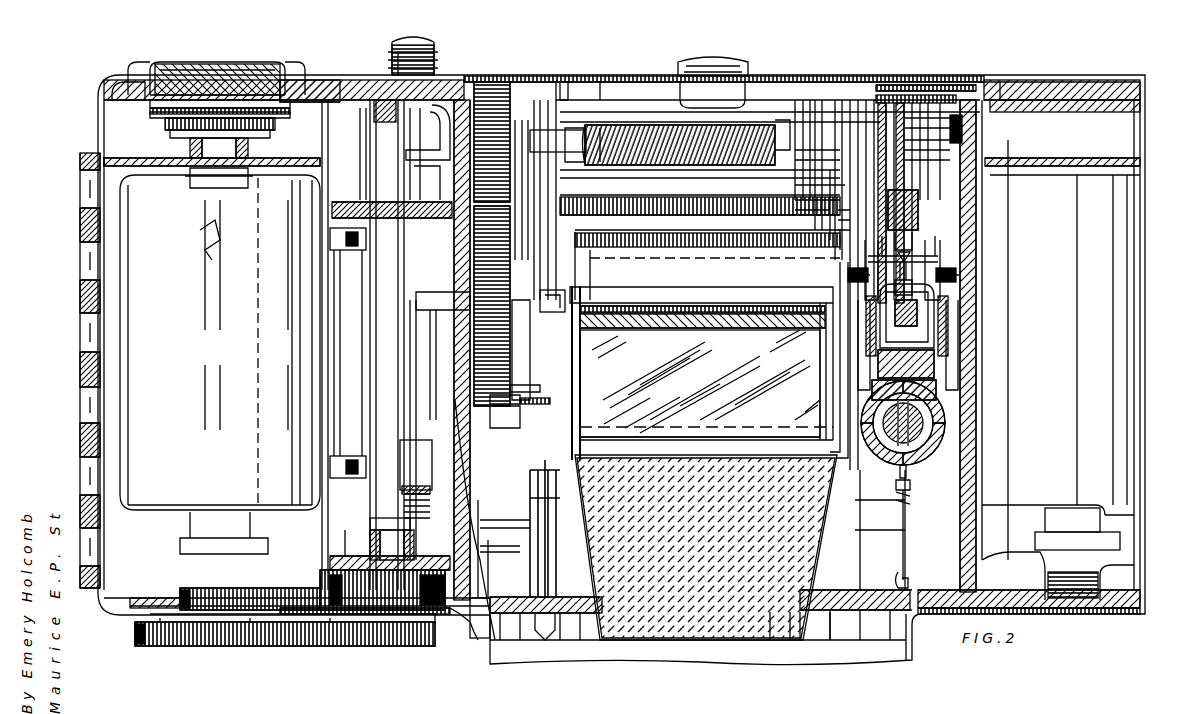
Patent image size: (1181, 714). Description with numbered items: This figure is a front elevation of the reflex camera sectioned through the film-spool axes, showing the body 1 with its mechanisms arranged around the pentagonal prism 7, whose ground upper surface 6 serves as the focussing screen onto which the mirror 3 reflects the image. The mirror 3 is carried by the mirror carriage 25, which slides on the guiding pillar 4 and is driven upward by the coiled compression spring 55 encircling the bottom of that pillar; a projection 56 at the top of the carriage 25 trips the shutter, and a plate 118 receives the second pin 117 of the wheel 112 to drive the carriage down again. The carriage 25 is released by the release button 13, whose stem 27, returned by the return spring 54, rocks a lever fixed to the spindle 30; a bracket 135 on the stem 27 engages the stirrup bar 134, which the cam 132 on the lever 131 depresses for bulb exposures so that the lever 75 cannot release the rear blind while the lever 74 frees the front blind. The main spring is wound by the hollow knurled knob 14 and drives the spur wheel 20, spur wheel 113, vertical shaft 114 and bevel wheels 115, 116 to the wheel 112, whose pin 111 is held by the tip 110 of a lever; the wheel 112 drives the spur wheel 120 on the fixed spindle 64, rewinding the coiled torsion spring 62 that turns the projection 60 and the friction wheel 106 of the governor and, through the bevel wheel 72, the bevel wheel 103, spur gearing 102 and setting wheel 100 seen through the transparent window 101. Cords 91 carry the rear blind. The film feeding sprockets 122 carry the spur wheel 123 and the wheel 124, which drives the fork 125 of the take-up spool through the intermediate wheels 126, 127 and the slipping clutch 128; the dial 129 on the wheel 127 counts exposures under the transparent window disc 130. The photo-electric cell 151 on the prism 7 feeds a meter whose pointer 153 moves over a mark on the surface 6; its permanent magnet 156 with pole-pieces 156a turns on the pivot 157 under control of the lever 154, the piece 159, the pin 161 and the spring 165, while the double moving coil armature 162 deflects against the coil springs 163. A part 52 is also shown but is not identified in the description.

The body 1 is at (600, 76).
The mirror 3 is at (590, 370).
The guiding pillar 4 is at (548, 243).
The upper surface of the prism 6 is at (640, 466).
The pentagonal prism 7 is at (620, 568).
The release button 13 is at (398, 40).
The hollow knurled knob 14 is at (140, 644).
The spur wheel 20 is at (200, 596).
The mirror carriage 25 is at (578, 410).
The stem 27 is at (420, 432).
The spindle 30 is at (492, 540).
The spring assembly 52 is at (410, 488).
The return spring 54 is at (455, 600).
The coiled compression spring 55 is at (540, 500).
The projection 56 is at (575, 298).
The projection 60 is at (810, 84).
The coiled torsion spring 62 is at (625, 152).
The fixed spindle 64 is at (562, 76).
The bevel wheel 72 is at (830, 165).
The lever 74 is at (965, 197).
The lever 75 is at (890, 140).
The cords 91 is at (520, 553).
The setting wheel 100 is at (1020, 74).
The transparent window 101 is at (1005, 76).
The spur gearing 102 is at (945, 76).
The bevel wheel 103 is at (965, 110).
The friction wheel 106 is at (968, 128).
The tip of the lever 110 is at (525, 385).
The pin 111 is at (500, 398).
The wheel 112 is at (512, 350).
The spur wheel 113 is at (430, 612).
The vertical shaft 114 is at (340, 346).
The bevel wheel 115 is at (356, 200).
The bevel wheel 116 is at (440, 315).
The second pin 117 is at (520, 225).
The plate 118 is at (498, 428).
The spur wheel 120 is at (490, 80).
The film feeding sprockets 122 is at (330, 242).
The spur wheel 123 is at (322, 576).
The wheel 124 is at (442, 75).
The fork 125 is at (208, 232).
The intermediate wheel 126 is at (310, 74).
The intermediate wheel 127 is at (210, 96).
The slipping clutch 128 is at (170, 132).
The dial 129 is at (112, 104).
The transparent window disc 130 is at (185, 78).
The lever 131 is at (740, 66).
The cam 132 is at (680, 78).
The stirrup bar 134 is at (400, 158).
The bracket 135 is at (400, 140).
The photo-electric cell 151 is at (800, 640).
The pointer 153 is at (830, 455).
The lever 154 is at (830, 206).
The permanent magnet 156 is at (925, 370).
The pole-pieces 156a is at (965, 215).
The pivot 157 is at (944, 262).
The piece 159 is at (945, 388).
The pin 161 is at (918, 445).
The double moving coil armature 162 is at (950, 240).
The coil springs 163 is at (944, 272).
The spring 165 is at (908, 486).